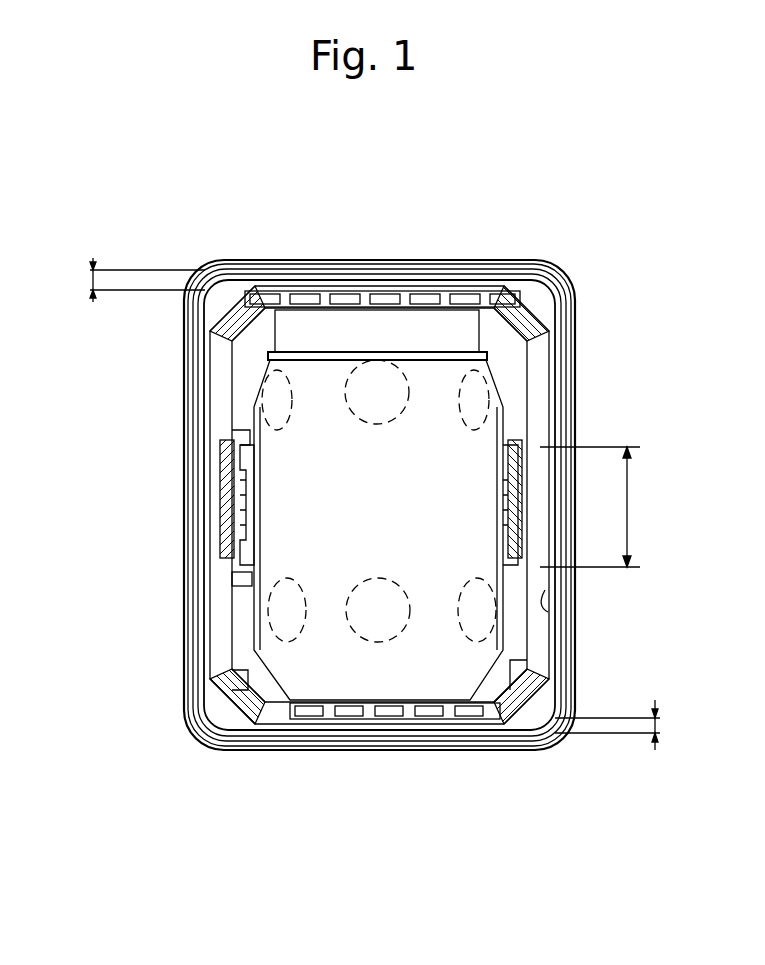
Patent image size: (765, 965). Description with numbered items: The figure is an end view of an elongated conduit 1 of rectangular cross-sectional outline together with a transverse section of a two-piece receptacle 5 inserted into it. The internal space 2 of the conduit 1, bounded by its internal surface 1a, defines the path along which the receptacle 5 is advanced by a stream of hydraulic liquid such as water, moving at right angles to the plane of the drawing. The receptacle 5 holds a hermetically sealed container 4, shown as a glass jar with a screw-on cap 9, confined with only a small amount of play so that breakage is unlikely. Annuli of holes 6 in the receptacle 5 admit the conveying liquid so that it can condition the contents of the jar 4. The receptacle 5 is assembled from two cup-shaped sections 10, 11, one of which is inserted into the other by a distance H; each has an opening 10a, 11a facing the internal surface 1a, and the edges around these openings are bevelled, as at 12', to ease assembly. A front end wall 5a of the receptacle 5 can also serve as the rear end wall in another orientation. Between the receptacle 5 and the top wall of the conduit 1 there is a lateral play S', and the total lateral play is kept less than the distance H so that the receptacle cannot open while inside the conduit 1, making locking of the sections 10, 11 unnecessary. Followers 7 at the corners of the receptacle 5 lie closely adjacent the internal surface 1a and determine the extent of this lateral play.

The conduit 1 is at (470, 266).
The internal surface 1a is at (548, 614).
The internal space 2 is at (535, 298).
The container 4 is at (392, 512).
The receptacle 5 is at (228, 563).
The front end wall 5a is at (382, 682).
The holes 6 is at (540, 410).
The followers 7 is at (225, 722).
The screw-on cap 9 is at (330, 330).
The section 10 is at (520, 722).
The opening 10a is at (245, 440).
The section 11 is at (218, 350).
The opening 11a is at (236, 604).
The bevelled edge 12' is at (171, 499).
The lateral play S' is at (130, 280).
The distance H is at (590, 507).